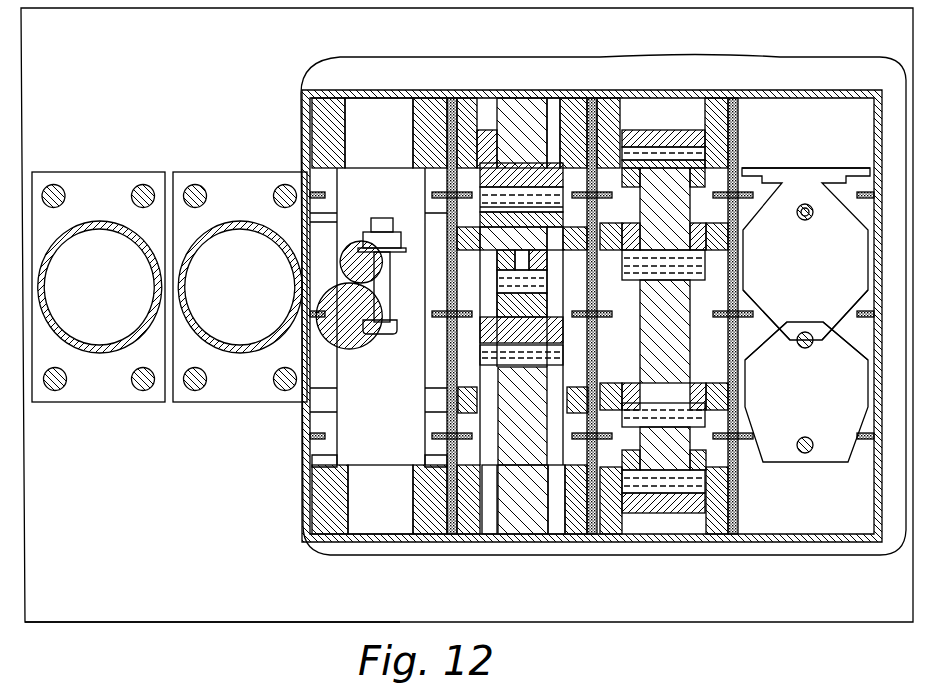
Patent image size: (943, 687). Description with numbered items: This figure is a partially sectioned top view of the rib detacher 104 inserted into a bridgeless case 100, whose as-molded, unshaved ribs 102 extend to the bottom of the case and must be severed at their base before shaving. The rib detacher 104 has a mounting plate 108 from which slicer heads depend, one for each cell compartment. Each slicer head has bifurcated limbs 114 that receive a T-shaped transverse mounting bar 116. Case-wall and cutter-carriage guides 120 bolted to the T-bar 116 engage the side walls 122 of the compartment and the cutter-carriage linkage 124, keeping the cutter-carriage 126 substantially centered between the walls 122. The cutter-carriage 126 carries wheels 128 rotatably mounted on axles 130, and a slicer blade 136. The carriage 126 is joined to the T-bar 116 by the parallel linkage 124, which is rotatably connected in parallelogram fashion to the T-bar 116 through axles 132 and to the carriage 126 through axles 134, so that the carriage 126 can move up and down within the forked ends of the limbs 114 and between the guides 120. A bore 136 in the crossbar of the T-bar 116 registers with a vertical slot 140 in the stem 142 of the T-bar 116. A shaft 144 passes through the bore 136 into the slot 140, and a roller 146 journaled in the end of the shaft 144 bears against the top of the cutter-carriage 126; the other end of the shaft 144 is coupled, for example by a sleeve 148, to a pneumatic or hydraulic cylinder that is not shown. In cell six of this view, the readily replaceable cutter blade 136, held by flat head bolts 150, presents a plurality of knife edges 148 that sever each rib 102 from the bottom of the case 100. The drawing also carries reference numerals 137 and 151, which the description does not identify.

The bridgeless case 100 is at (427, 97).
The ribs 102 is at (443, 312).
The rib detacher 104 is at (208, 628).
The mounting plate 108 is at (110, 605).
The bifurcated limbs 114 is at (413, 110).
The T-shaped transverse mounting bar 116 is at (308, 212).
The case-wall and cutter-carriage guides 120 is at (270, 420).
The side walls 122 is at (453, 423).
The cutter-carriage linkage 124 is at (490, 245).
The cutter-carriage 126 is at (683, 203).
The wheels 128 is at (700, 130).
The axles 130 is at (657, 150).
The axles 132 is at (472, 203).
The axles 134 is at (787, 258).
The slicer blade 136 is at (775, 168).
The bearing race 137 is at (490, 348).
The vertical slot 140 is at (556, 243).
The stem 142 is at (540, 97).
The shaft 144 is at (350, 287).
The roller 146 is at (520, 272).
The knife edges 148 is at (352, 270).
The flat head bolts 150 is at (812, 205).
The screw hole 151 is at (807, 207).